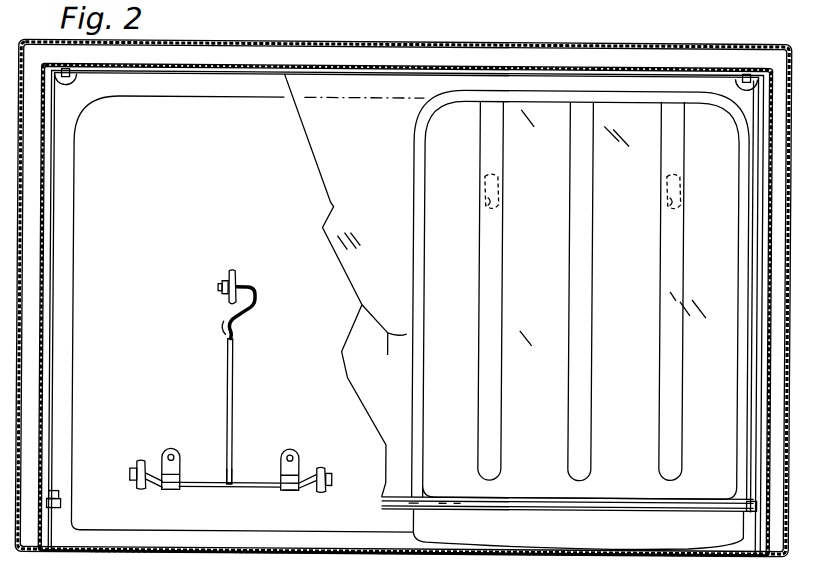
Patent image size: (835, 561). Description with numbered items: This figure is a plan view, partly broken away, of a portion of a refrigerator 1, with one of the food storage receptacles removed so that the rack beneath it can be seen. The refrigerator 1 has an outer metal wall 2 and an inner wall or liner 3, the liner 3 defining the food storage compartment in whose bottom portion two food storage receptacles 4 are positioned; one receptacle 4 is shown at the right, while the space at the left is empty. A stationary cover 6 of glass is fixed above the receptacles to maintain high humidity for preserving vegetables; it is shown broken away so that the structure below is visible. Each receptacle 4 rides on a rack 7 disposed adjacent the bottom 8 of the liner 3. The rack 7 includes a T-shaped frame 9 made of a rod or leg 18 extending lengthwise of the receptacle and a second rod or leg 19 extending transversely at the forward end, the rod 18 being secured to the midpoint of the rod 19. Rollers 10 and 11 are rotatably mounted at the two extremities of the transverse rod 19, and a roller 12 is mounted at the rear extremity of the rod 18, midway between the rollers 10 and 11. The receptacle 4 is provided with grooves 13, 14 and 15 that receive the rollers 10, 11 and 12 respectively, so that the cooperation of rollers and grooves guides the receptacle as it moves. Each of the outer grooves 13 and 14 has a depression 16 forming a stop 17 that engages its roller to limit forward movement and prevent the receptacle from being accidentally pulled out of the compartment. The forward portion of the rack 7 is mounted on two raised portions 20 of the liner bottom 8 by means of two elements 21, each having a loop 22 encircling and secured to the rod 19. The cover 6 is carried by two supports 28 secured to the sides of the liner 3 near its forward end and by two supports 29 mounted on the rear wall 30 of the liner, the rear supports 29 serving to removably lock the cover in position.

The refrigerator 1 is at (306, 43).
The outer metal wall 2 is at (18, 365).
The inner wall or liner 3 is at (36, 320).
The food storage receptacle 4 is at (440, 225).
The stationary cover 6 is at (318, 148).
The rack 7 is at (234, 404).
The bottom of the liner 8 is at (111, 312).
The T-shaped frame 9 is at (234, 444).
The roller 10 is at (141, 463).
The roller 11 is at (323, 469).
The roller 12 is at (228, 273).
The groove 13 is at (490, 136).
The groove 14 is at (669, 126).
The groove 15 is at (573, 134).
The depression 16 is at (484, 178).
The stop 17 is at (487, 206).
The rod or leg 18 is at (228, 358).
The second rod or leg 19 is at (208, 484).
The raised portion 20 is at (172, 450).
The element 21 is at (180, 472).
The loop 22 is at (171, 492).
The support 28 is at (61, 497).
The support 29 is at (64, 82).
The rear wall 30 is at (167, 72).